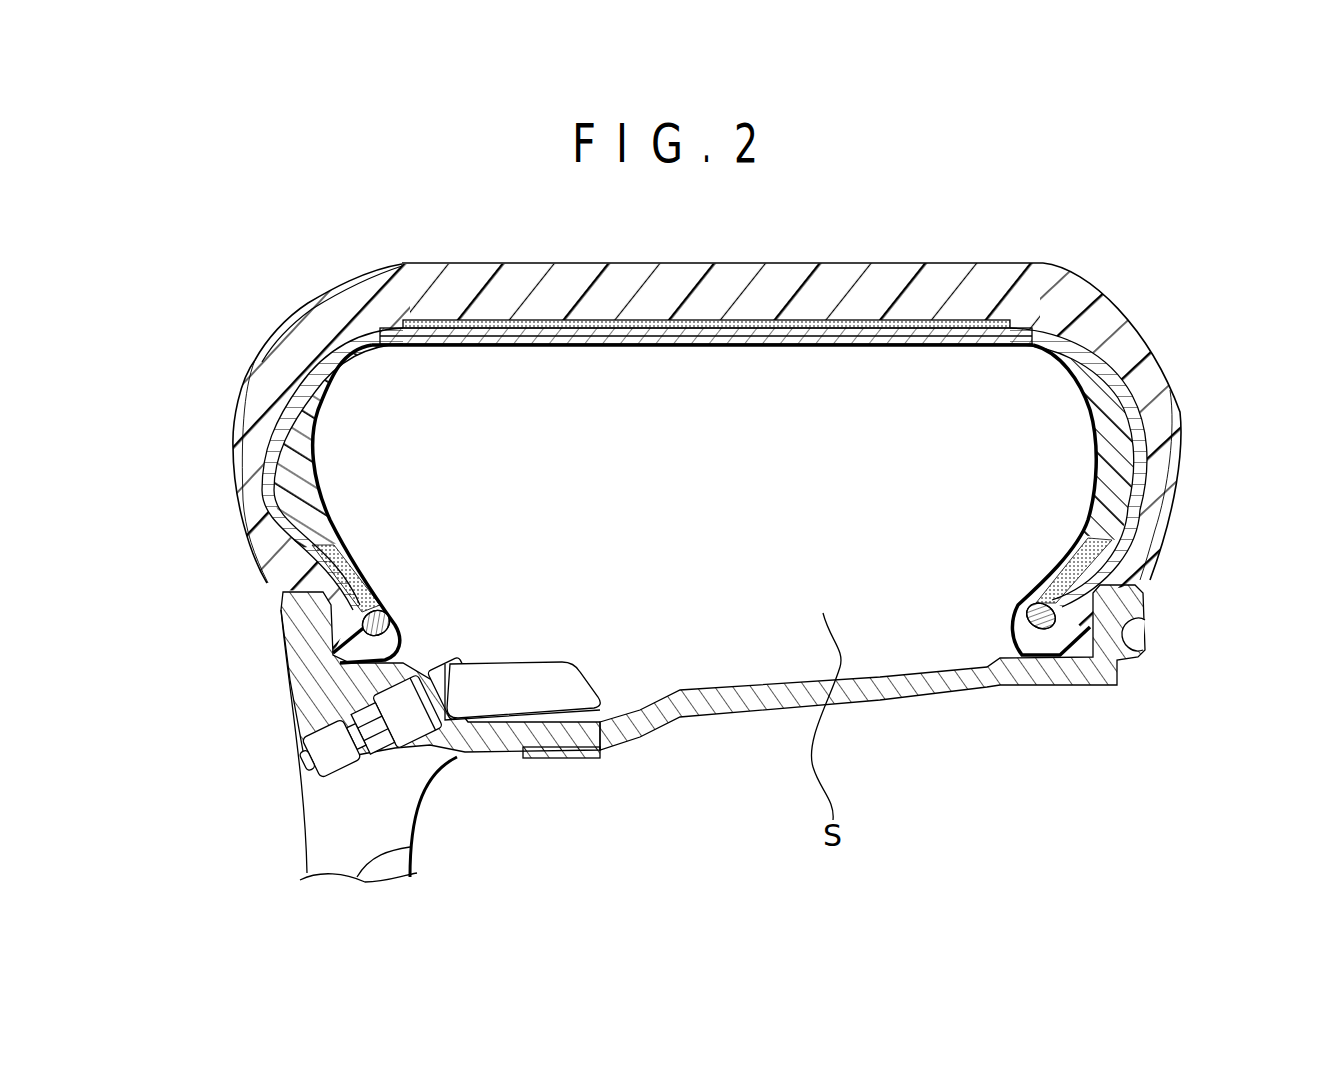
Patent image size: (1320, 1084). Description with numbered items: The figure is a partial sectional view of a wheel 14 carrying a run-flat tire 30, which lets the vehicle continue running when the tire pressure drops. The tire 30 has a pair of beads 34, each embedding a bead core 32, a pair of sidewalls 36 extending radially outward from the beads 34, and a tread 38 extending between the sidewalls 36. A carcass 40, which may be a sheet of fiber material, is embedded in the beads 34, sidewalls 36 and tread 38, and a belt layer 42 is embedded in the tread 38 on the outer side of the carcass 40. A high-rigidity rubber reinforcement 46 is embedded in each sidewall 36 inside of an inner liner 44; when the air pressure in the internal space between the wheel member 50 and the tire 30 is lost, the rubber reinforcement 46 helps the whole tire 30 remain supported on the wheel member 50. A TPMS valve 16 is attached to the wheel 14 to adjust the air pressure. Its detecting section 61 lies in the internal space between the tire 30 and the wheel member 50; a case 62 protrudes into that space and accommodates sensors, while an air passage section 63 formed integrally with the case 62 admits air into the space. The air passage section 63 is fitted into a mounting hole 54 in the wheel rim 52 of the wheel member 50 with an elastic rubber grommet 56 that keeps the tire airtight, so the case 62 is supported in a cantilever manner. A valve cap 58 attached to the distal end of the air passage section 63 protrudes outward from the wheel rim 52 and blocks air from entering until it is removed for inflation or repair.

The wheel 14 is at (286, 289).
The TPMS valve 16 is at (557, 641).
The tire 30 is at (1113, 281).
The bead core 32 is at (397, 612).
The bead 34 is at (403, 617).
The sidewall 36 is at (237, 398).
The tread 38 is at (680, 262).
The carcass 40 is at (267, 480).
The belt layer 42 is at (565, 318).
The inner liner 44 is at (688, 347).
The rubber reinforcement 46 is at (283, 430).
The wheel member 50 is at (333, 872).
The wheel rim 52 is at (292, 610).
The mounting hole 54 is at (358, 741).
The grommet 56 is at (407, 711).
The valve cap 58 is at (337, 722).
The detecting section 61 is at (596, 684).
The case 62 is at (565, 663).
The air passage section 63 is at (423, 757).